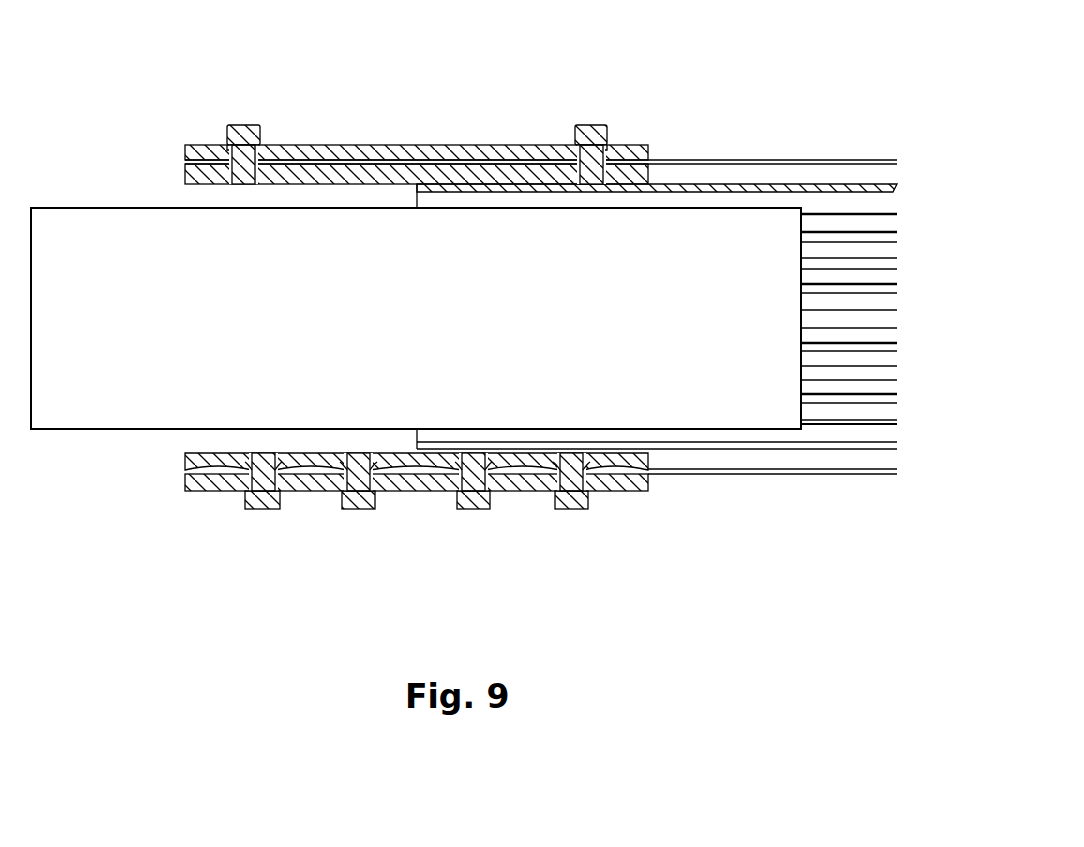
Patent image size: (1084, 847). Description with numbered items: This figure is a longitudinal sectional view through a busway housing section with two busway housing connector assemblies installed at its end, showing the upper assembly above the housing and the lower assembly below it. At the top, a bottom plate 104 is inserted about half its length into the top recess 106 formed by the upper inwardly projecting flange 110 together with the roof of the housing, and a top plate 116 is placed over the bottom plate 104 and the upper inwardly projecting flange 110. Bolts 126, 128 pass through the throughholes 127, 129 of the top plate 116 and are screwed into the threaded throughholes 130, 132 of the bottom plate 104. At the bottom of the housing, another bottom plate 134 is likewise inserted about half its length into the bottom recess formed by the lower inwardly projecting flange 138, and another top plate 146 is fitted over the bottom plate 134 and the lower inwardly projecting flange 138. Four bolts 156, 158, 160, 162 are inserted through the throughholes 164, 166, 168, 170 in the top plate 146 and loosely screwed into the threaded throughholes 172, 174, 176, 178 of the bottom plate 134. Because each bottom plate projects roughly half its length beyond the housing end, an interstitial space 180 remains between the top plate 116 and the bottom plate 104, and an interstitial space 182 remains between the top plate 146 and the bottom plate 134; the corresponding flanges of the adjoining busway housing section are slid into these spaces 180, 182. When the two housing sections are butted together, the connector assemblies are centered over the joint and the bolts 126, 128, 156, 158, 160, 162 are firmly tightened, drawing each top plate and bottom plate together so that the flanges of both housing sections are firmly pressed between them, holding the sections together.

The bottom plate 104 is at (360, 147).
The top recess 106 is at (737, 178).
The upper inwardly projecting flange 110 is at (501, 109).
The top plate 116 is at (452, 145).
The bolt 126 is at (236, 114).
The throughhole 127 is at (240, 125).
The bolt 128 is at (591, 118).
The throughhole 129 is at (608, 140).
The threaded throughhole 130 is at (262, 170).
The threaded throughhole 132 is at (573, 170).
The bottom plate 134 is at (650, 463).
The lower inwardly projecting flange 138 is at (798, 474).
The top plate 146 is at (185, 490).
The bolt 156 is at (222, 484).
The bolt 158 is at (317, 484).
The bolt 160 is at (433, 484).
The bolt 162 is at (530, 484).
The throughhole 164 is at (227, 488).
The throughhole 166 is at (322, 488).
The throughhole 168 is at (442, 488).
The throughhole 170 is at (548, 488).
The threaded throughhole 172 is at (243, 453).
The threaded throughhole 174 is at (340, 453).
The threaded throughhole 176 is at (453, 453).
The threaded throughhole 178 is at (562, 453).
The interstitial space 180 is at (185, 160).
The interstitial space 182 is at (185, 473).